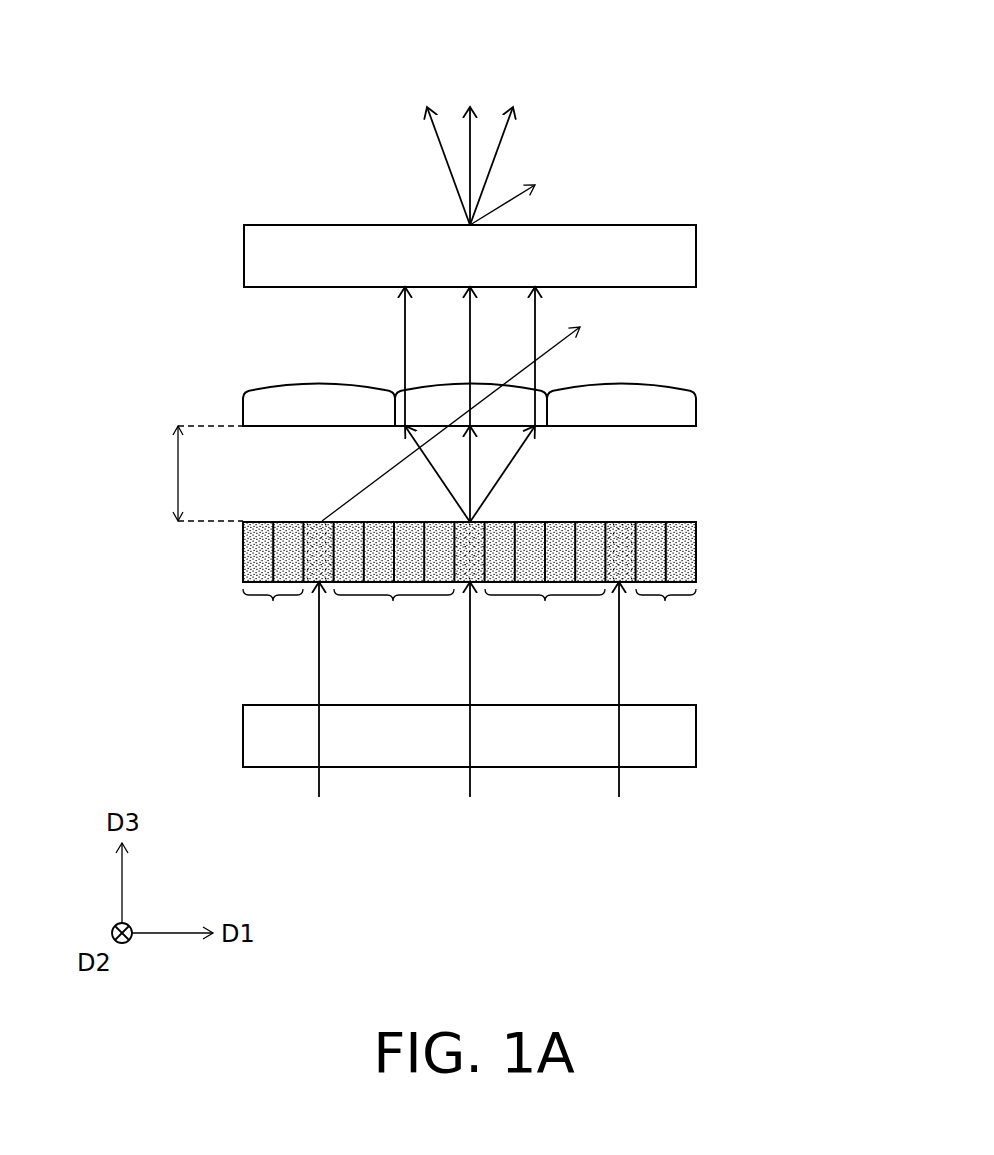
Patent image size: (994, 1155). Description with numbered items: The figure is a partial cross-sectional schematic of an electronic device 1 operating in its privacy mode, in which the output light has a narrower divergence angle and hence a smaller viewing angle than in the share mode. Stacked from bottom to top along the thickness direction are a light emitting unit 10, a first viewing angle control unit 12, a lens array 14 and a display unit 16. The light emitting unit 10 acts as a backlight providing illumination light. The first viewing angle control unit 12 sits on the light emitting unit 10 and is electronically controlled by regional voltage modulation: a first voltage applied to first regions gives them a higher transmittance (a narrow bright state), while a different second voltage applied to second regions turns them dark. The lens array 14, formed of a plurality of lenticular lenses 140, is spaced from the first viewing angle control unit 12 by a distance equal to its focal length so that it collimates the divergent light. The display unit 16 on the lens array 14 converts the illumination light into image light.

The electronic device 1 is at (704, 99).
The light emitting unit 10 is at (706, 705).
The first viewing angle control unit 12 is at (706, 522).
The lens array 14 is at (463, 404).
The lenticular lens 140 is at (270, 408).
The display unit 16 is at (706, 226).